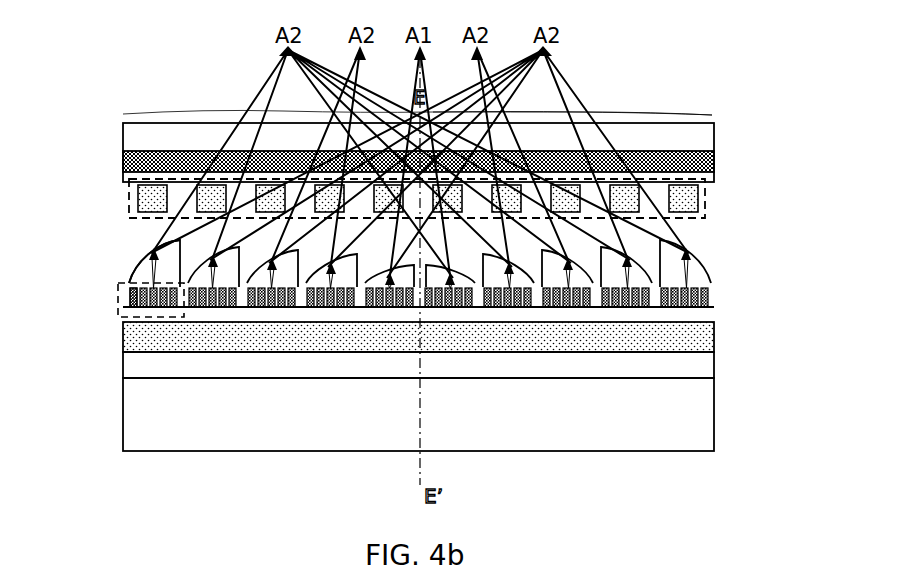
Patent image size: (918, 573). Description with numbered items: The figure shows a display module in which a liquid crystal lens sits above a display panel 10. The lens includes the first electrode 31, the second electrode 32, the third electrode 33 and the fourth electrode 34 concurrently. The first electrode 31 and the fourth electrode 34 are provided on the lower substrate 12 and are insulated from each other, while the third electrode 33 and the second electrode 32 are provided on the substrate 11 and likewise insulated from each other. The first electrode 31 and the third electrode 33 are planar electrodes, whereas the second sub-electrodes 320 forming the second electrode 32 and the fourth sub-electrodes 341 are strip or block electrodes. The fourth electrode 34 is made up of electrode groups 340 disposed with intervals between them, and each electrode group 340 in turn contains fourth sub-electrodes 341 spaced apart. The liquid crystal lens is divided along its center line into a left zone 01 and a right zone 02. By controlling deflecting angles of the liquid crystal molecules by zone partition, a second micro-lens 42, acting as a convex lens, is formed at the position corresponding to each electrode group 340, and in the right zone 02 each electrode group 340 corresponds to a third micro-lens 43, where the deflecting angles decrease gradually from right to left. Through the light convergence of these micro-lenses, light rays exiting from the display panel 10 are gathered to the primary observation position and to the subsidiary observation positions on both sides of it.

The display panel 10 is at (700, 421).
The substrate 11 is at (693, 135).
The lower substrate 12 is at (703, 366).
The first electrode 31 is at (700, 339).
The second electrode 32 is at (405, 198).
The second sub-electrodes 320 is at (128, 198).
The third electrode 33 is at (700, 164).
The fourth electrode 34 is at (394, 295).
The electrode group 340 is at (118, 284).
The fourth sub-electrodes 341 is at (128, 300).
The second micro-lens 42 is at (138, 259).
The third micro-lens 43 is at (427, 254).
The left zone 01 is at (417, 100).
The right zone 02 is at (572, 100).